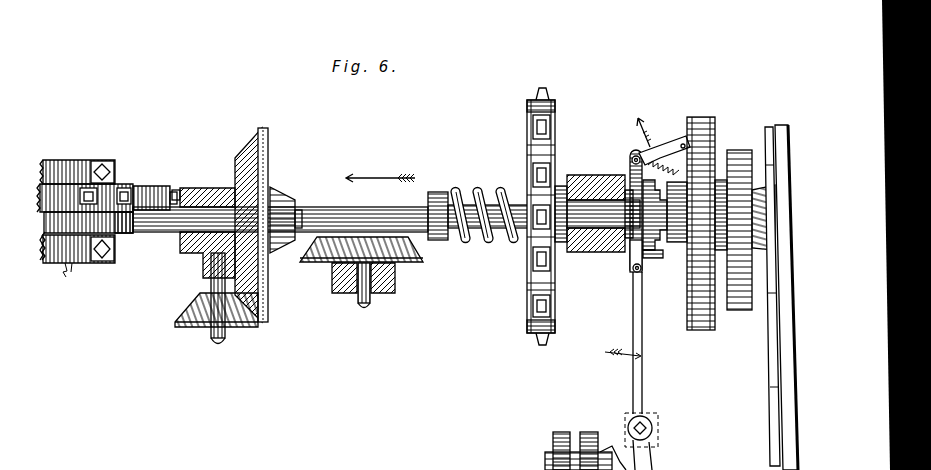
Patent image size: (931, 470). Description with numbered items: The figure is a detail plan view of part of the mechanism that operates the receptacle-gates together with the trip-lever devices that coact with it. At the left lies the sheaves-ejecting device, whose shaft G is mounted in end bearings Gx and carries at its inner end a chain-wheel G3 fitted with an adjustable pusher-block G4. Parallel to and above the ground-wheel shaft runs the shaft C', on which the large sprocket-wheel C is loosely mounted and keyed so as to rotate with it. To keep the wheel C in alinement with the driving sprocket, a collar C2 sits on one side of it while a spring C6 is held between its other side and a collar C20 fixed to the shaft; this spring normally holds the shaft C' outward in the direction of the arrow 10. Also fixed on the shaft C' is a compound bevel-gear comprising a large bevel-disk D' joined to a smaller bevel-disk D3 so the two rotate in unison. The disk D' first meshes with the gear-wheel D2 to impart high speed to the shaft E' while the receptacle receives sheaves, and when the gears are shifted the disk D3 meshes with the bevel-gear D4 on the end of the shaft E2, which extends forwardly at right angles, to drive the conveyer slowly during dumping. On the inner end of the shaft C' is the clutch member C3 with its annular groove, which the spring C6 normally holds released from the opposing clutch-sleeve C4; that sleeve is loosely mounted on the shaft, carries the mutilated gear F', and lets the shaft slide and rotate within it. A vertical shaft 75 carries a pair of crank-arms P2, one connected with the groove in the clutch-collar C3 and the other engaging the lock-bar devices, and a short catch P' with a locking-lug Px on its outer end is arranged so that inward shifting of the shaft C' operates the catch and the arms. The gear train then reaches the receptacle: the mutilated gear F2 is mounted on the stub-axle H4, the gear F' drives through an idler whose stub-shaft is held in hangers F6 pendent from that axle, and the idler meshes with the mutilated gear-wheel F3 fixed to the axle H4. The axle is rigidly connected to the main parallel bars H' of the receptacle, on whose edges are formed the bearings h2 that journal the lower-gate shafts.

The shaft G is at (60, 262).
The end bearings Gx is at (95, 170).
The chain-wheel G3 is at (142, 185).
The adjustable pusher-block G4 is at (132, 233).
The large bevel-disk D' is at (235, 225).
The gear-wheel D2 is at (200, 307).
The shaft E' is at (231, 306).
The smaller bevel-disk D3 is at (285, 193).
The shaft C' is at (280, 207).
The bevel-gear D4 is at (404, 260).
The shaft E2 is at (363, 306).
The arrow 10 is at (380, 169).
The collar C20 is at (438, 190).
The spring C6 is at (482, 192).
The sprocket-wheel C is at (524, 216).
The collar C2 is at (558, 195).
The crank-arms P2 is at (644, 375).
The vertical shaft 75 is at (654, 425).
The catch P' is at (664, 148).
The locking-lug Px is at (680, 134).
The clutch member C3 is at (662, 246).
The clutch-sleeve C4 is at (680, 265).
The mutilated gear F2 is at (705, 277).
The second mutilated gear F' is at (701, 236).
The stub-axle H4 is at (700, 192).
The mutilated gear-wheel F3 is at (742, 300).
The hangers F6 is at (766, 200).
The main parallel bars H' is at (796, 297).
The bearings h2 is at (778, 336).